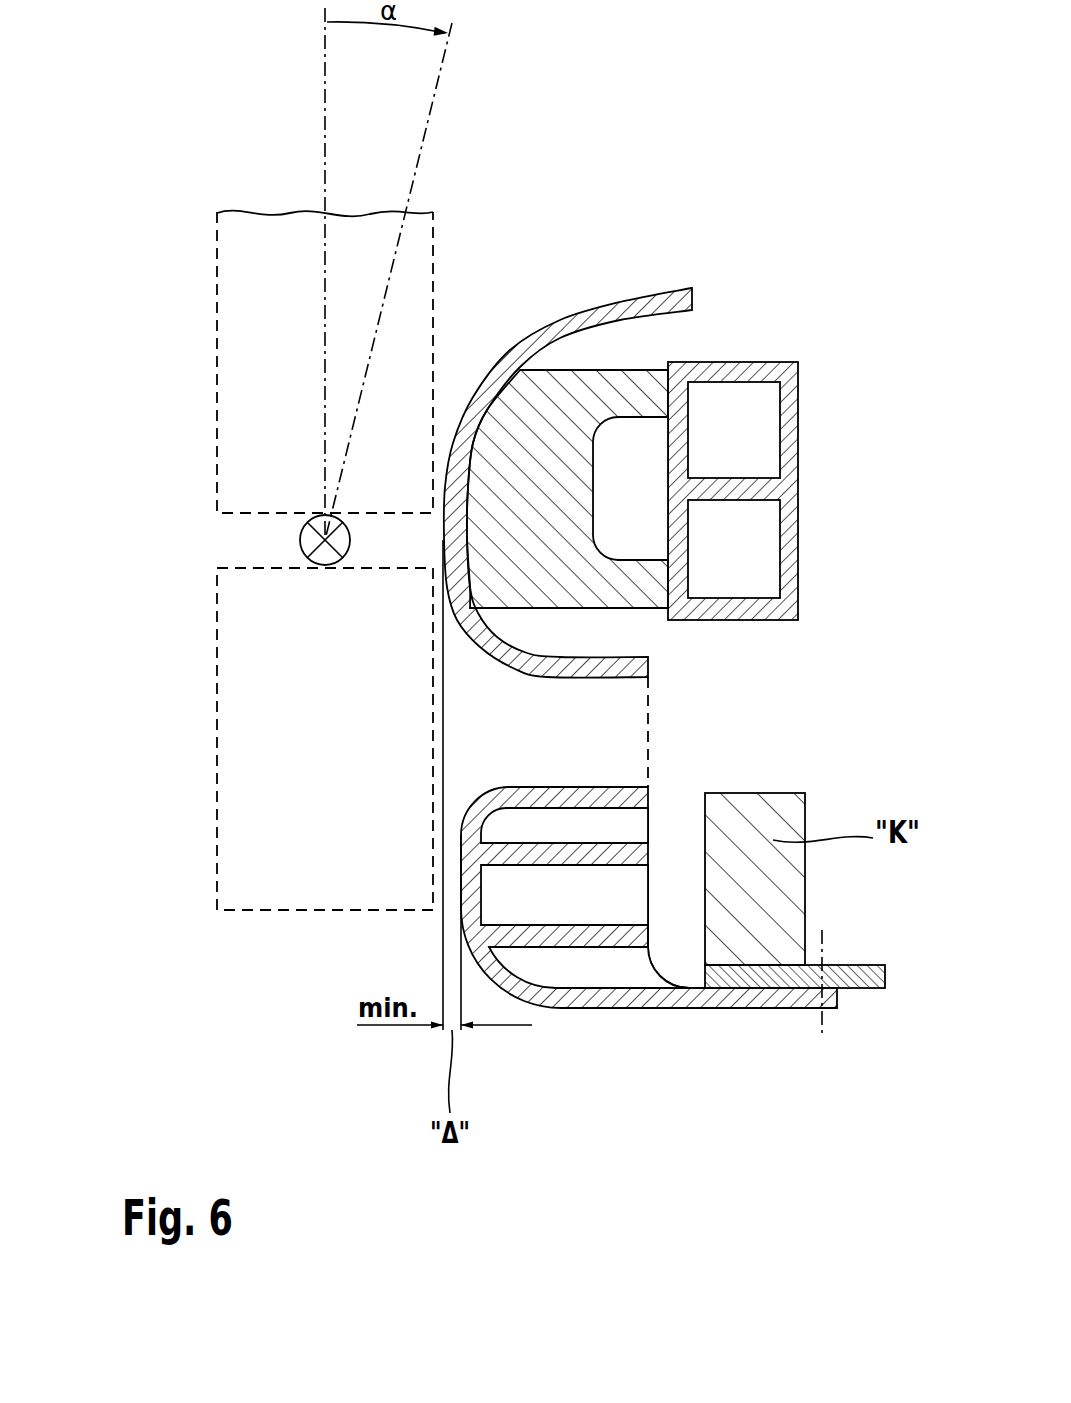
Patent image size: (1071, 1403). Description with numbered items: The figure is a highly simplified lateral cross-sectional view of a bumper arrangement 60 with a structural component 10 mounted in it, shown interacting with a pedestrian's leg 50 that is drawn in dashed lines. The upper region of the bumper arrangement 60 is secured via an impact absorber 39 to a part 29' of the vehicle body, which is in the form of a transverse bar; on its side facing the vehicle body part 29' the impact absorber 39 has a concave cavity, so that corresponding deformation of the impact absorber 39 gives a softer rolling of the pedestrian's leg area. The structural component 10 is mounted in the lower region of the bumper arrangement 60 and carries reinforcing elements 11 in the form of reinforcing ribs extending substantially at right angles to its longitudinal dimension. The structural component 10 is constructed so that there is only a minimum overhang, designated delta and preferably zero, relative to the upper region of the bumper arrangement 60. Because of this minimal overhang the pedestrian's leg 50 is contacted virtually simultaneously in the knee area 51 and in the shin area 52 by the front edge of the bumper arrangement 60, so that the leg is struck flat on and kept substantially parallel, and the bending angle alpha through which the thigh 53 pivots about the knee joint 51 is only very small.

The structural component 10 is at (552, 1035).
The reinforcing element 11 is at (626, 935).
The vehicle body part 29' is at (794, 491).
The impact absorber 39 is at (607, 390).
The pedestrian's leg 50 is at (170, 690).
The knee area 51 is at (298, 540).
The shin area 52 is at (240, 803).
The thigh 53 is at (240, 360).
The bumper arrangement 60 is at (600, 220).